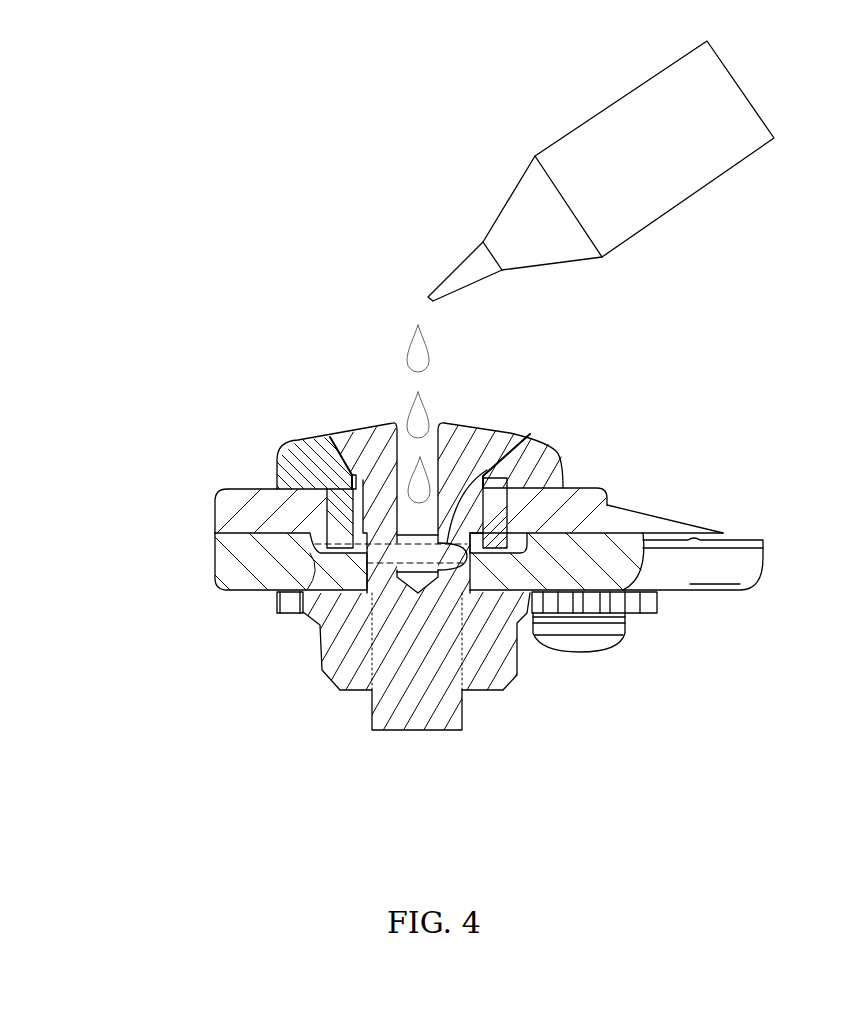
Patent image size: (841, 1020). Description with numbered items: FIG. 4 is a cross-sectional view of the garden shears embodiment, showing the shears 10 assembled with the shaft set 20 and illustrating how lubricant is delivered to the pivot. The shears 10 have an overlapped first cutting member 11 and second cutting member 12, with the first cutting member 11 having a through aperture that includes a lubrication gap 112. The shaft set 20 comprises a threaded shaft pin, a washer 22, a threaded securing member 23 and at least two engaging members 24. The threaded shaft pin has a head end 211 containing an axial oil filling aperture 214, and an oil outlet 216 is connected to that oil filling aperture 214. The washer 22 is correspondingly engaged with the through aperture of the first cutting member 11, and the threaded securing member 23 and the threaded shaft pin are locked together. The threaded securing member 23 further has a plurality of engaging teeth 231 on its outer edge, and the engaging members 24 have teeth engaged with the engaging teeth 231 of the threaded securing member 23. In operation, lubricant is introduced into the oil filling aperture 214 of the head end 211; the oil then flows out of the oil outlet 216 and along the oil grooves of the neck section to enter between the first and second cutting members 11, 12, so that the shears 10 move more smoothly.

The shears 10 is at (607, 470).
The first cutting member 11 is at (227, 515).
The second cutting member 12 is at (230, 572).
The lubrication gap 112 is at (262, 593).
The shaft set 20 is at (344, 405).
The head end 211 is at (332, 433).
The oil filling aperture 214 is at (433, 423).
The oil outlet 216 is at (555, 440).
The washer 22 is at (277, 475).
The threaded securing member 23 is at (517, 675).
The engaging teeth 231 is at (555, 600).
The engaging members 24 is at (657, 602).